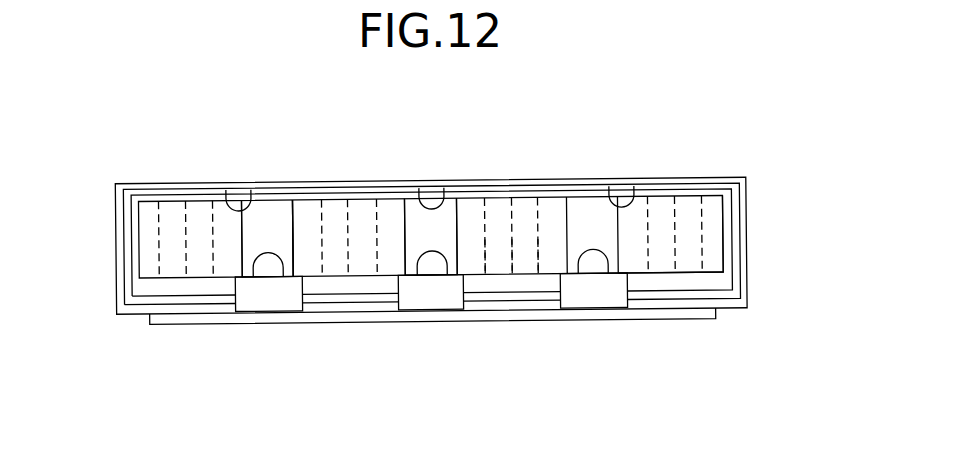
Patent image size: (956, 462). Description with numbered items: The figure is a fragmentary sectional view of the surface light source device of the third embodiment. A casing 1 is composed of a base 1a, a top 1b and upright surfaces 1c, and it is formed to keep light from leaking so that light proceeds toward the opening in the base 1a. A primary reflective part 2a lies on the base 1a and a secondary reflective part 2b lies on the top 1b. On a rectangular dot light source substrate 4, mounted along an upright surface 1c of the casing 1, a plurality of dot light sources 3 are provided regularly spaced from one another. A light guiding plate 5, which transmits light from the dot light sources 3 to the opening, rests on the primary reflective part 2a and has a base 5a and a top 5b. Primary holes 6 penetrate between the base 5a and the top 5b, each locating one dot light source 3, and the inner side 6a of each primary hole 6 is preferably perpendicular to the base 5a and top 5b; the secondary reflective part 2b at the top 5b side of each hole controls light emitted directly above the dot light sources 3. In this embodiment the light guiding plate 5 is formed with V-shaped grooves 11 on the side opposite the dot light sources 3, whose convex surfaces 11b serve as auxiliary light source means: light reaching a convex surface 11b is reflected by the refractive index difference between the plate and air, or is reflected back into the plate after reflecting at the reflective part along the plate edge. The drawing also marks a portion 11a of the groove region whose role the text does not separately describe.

The casing 1 is at (676, 182).
The base 1a is at (307, 302).
The top 1b is at (241, 207).
The upright surface 1c is at (125, 244).
The primary reflective part 2a is at (386, 297).
The secondary reflective part 2b is at (423, 202).
The dot light source 3 is at (591, 266).
The dot light source substrate 4 is at (222, 318).
The light guiding plate 5 is at (712, 210).
The base of the light guiding plate 5a is at (711, 266).
The top of the light guiding plate 5b is at (610, 200).
The primary hole 6 is at (267, 221).
The inner side of the primary hole 6a is at (294, 224).
The V-shaped groove 11 is at (172, 215).
The internal element lower portion (hidden) 11a is at (512, 242).
The convex surface 11b is at (530, 217).